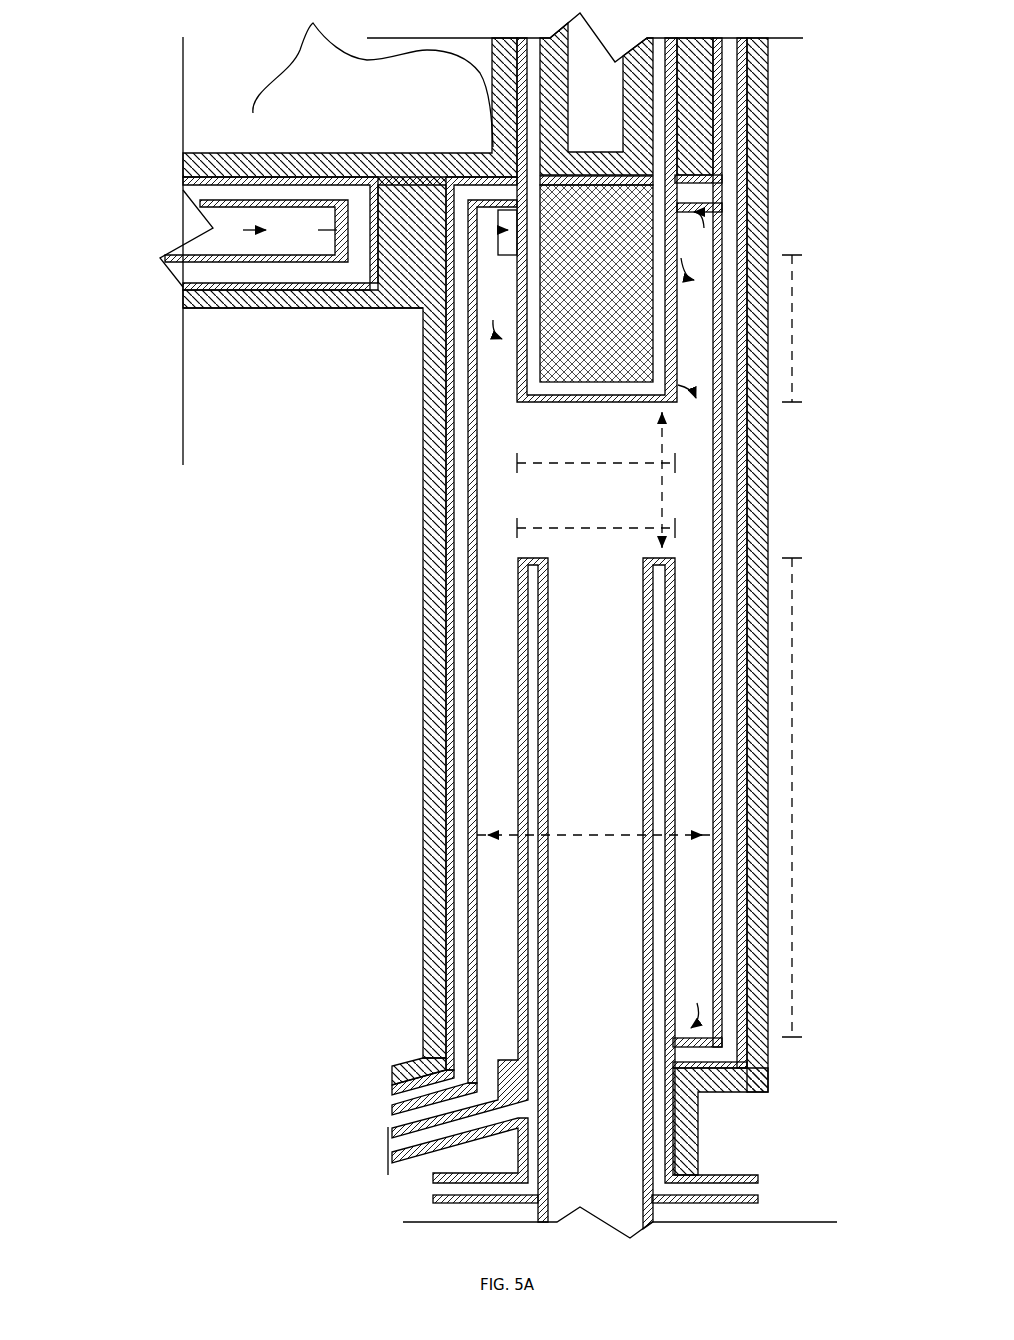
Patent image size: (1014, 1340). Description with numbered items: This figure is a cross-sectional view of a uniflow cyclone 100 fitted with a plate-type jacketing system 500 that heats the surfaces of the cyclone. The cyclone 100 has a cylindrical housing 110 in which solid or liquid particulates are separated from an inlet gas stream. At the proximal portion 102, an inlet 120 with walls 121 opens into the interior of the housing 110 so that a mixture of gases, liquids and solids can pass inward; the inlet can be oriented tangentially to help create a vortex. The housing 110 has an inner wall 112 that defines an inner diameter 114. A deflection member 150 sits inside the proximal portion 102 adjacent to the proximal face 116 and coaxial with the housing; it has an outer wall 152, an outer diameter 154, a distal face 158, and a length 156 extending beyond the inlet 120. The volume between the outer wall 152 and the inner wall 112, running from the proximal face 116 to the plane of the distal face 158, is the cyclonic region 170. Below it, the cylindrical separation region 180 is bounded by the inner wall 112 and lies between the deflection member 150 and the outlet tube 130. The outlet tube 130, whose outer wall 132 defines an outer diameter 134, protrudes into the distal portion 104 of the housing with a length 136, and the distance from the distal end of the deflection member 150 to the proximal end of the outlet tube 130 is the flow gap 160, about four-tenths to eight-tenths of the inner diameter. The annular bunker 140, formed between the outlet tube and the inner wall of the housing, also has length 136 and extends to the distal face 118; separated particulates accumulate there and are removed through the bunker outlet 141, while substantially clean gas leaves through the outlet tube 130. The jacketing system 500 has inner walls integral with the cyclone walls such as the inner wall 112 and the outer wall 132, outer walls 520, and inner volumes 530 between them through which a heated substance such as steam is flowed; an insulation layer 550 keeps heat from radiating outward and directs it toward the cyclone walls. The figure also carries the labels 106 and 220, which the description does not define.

The cyclone 100 is at (100, 44).
The plate-type jacketing system 500 is at (303, 34).
The inlet 120 is at (262, 150).
The inner volumes 530 is at (318, 190).
The outer walls 520 is at (357, 178).
The insulation layer 550 is at (425, 182).
The proximal portion 102 is at (790, 118).
The housing 110 is at (770, 163).
The proximal face 116 is at (672, 238).
The deflection member 150 is at (694, 242).
The outer wall 152 is at (672, 258).
The length 156 is at (795, 318).
The fluid inlet 106 is at (253, 233).
The walls 121 is at (270, 262).
The cyclonic region 170 is at (486, 385).
The distal face 158 is at (590, 408).
The outer diameter 154 is at (580, 463).
The inner wall 112 is at (718, 440).
The flow gap 160 is at (662, 503).
The outer diameter 134 is at (580, 528).
The separation region 180 is at (486, 504).
The flow path 220 is at (486, 625).
The outlet tube 130 is at (575, 893).
The outer wall 132 is at (548, 697).
The length 136 is at (795, 792).
The inner diameter 114 is at (613, 835).
The bunker 140 is at (497, 1015).
The bunker outlet 141 is at (395, 1060).
The distal face 118 is at (708, 1092).
The distal portion 104 is at (808, 1086).